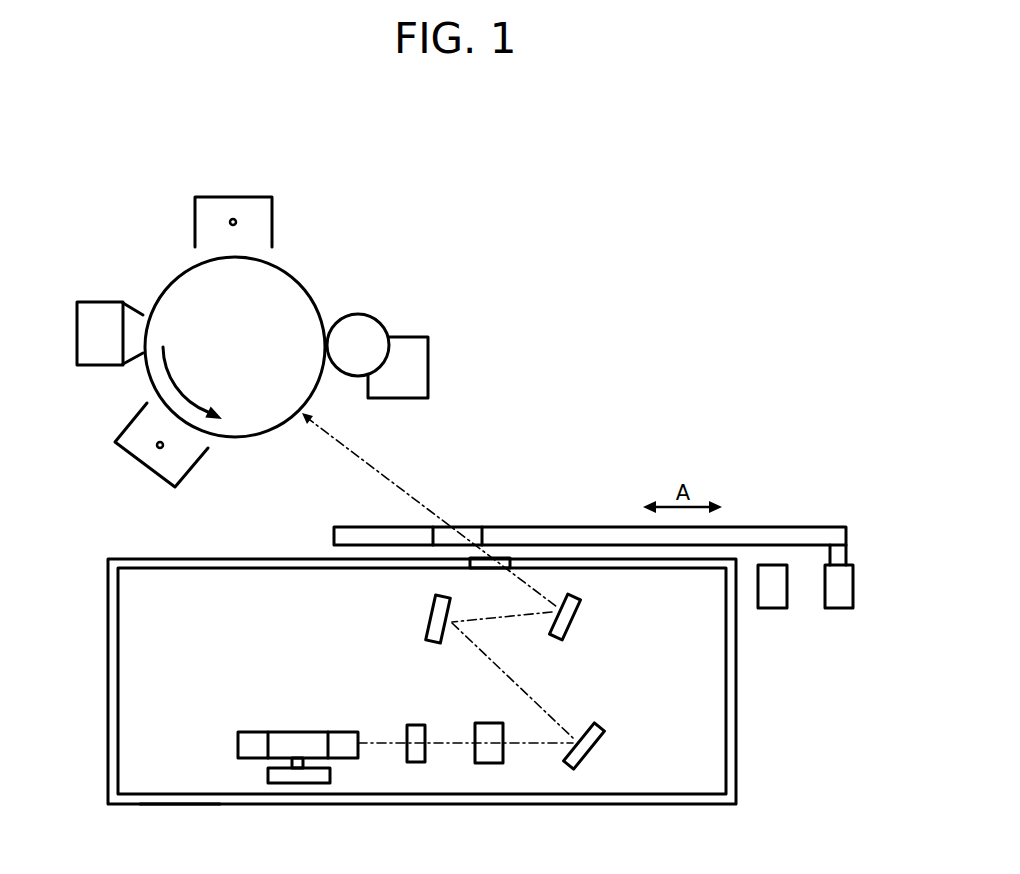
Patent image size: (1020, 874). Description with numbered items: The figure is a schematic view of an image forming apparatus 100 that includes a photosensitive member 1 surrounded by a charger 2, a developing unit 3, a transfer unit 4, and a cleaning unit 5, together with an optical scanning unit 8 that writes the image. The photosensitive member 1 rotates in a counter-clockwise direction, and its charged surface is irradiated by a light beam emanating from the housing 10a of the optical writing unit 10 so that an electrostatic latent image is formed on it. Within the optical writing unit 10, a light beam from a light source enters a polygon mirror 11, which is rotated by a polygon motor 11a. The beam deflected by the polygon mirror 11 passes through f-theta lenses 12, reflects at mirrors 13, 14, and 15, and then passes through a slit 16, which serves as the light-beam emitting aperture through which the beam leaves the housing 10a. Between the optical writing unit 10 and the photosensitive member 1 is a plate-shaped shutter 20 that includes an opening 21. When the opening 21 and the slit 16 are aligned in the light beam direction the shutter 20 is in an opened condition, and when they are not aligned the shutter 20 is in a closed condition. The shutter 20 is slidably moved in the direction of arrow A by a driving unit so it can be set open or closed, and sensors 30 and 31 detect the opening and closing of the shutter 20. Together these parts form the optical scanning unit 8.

The image forming apparatus 100 is at (646, 198).
The photosensitive member 1 is at (293, 297).
The charger 2 is at (142, 468).
The developing unit 3 is at (410, 337).
The transfer unit 4 is at (233, 197).
The cleaning unit 5 is at (105, 302).
The optical scanning unit 8 is at (634, 419).
The optical writing unit 10 is at (98, 613).
The housing 10a is at (180, 805).
The polygon mirror 11 is at (298, 737).
The polygon motor 11a is at (330, 773).
The f-theta lenses 12 is at (420, 723).
The mirror 13 is at (596, 753).
The mirror 14 is at (430, 622).
The mirror 15 is at (568, 628).
The slit 16 is at (505, 558).
The shutter 20 is at (563, 526).
The opening 21 is at (468, 531).
The sensor 30 is at (838, 608).
The sensor 31 is at (772, 608).